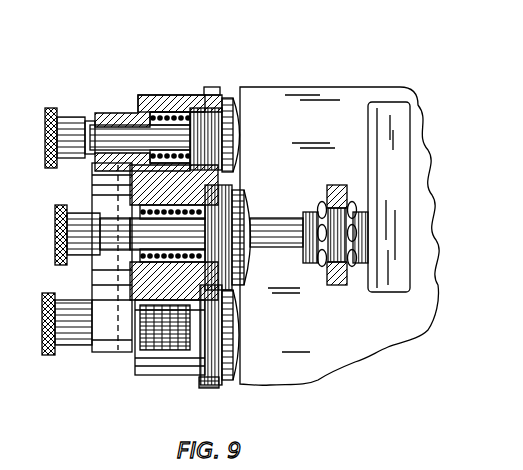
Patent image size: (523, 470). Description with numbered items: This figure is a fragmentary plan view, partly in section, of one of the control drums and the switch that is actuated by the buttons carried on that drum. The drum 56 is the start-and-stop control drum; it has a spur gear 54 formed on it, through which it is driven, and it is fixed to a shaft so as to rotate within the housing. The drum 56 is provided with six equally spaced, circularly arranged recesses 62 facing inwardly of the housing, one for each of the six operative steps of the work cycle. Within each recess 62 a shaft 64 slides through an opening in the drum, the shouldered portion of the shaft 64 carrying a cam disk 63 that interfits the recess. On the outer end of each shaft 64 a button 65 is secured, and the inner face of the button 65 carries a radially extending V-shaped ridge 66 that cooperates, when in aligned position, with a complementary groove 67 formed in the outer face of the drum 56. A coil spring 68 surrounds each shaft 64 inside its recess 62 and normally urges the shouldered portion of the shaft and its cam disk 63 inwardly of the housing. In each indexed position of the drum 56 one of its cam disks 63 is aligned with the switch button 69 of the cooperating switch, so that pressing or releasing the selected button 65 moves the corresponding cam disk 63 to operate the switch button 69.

The spur gear 54 is at (214, 89).
The drum 56 is at (150, 103).
The recess 62 is at (172, 118).
The cam disk 63 is at (237, 141).
The shaft 64 is at (108, 128).
The button 65 is at (86, 120).
The V-shaped ridge 66 is at (97, 141).
The groove 67 is at (97, 235).
The coil spring 68 is at (190, 168).
The switch button 69 is at (276, 220).